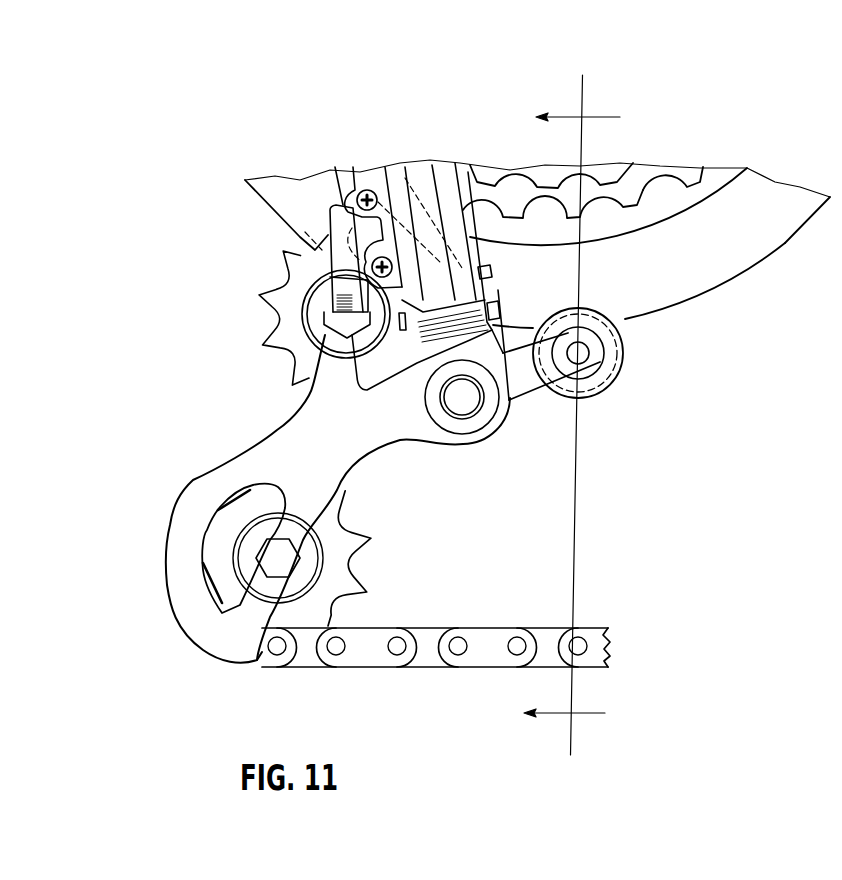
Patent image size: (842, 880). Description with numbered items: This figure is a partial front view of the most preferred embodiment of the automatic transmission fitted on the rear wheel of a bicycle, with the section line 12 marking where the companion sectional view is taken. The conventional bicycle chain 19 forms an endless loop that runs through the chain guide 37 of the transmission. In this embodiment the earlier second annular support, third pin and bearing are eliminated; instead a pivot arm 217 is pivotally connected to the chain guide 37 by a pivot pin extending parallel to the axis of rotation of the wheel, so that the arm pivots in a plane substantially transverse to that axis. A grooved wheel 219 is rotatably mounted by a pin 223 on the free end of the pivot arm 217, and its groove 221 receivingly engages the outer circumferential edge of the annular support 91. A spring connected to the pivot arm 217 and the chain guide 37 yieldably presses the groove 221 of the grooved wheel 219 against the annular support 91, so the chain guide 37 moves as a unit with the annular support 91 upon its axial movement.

The annular support 91 is at (784, 190).
The grooved wheel 219 is at (621, 341).
The groove 221 is at (604, 367).
The pin 223 is at (583, 357).
The pivot arm 217 is at (535, 398).
The chain guide 37 is at (360, 503).
The bicycle chain 19 is at (511, 639).
The section line 12- 12 is at (572, 415).